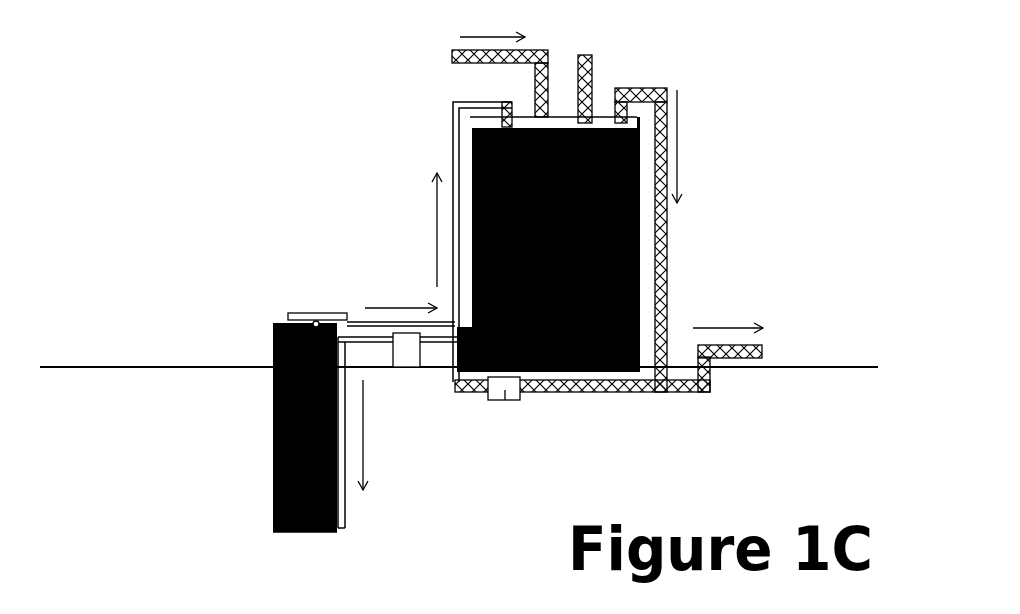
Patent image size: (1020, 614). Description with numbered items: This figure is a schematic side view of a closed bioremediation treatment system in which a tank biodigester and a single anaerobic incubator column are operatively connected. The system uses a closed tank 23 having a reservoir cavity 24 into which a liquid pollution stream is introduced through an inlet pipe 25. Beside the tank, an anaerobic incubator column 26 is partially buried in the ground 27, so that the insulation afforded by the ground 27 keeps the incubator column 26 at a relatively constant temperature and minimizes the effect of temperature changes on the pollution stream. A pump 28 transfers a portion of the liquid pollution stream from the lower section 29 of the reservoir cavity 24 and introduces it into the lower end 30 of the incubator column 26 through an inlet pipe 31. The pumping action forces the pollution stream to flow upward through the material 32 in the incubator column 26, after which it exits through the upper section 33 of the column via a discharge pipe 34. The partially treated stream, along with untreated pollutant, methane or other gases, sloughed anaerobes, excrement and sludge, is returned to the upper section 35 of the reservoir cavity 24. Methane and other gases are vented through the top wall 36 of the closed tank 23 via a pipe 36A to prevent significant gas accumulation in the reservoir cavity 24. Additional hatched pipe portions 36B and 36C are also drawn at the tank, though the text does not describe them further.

The closed tank 23 is at (640, 225).
The reservoir cavity 24 is at (547, 250).
The inlet pipe 25 is at (452, 53).
The anaerobic incubator column 26 is at (273, 352).
The ground 27 is at (475, 411).
The pump 28 is at (407, 352).
The lower section 29 is at (592, 372).
The lower end 30 is at (308, 533).
The inlet pipe 31 is at (342, 500).
The material 32 is at (273, 487).
The upper section 33 is at (277, 323).
The discharge pipe 34 is at (450, 250).
The upper section 35 is at (457, 140).
The top wall 36 is at (563, 110).
The pipe 36A is at (592, 77).
The outlet tube 36B is at (762, 355).
The drain 36C is at (505, 400).